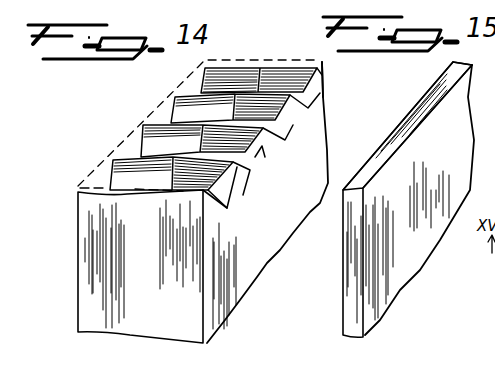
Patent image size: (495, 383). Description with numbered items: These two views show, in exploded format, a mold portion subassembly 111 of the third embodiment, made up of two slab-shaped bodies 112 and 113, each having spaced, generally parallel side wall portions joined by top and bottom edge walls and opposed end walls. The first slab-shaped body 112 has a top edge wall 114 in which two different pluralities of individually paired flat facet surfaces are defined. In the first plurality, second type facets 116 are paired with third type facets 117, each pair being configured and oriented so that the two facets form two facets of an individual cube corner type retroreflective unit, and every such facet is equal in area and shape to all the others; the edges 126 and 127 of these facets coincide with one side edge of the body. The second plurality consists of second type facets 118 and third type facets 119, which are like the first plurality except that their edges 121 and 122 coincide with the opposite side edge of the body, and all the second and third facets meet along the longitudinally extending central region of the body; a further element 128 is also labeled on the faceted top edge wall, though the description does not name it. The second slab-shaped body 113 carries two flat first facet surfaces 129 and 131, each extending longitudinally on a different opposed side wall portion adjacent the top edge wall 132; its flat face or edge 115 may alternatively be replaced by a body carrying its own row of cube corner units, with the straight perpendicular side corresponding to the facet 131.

In FIG. 14, the subassembly 111 is at (70, 345).
In FIG. 14, the slab-shaped body 112 is at (177, 289).
In FIG. 15, the slab-shaped body 113 is at (421, 217).
In FIG. 14, the top edge wall 114 is at (320, 59).
In FIG. 15, the flat face or edge 115 is at (449, 90).
In FIG. 14, the second type flat facet surface 116 is at (133, 165).
In FIG. 14, the third type flat facet surface 117 is at (148, 152).
In FIG. 14, the second type facet 118 is at (262, 157).
In FIG. 14, the third type facet 119 is at (255, 183).
In FIG. 14, the edge of facet 118 121 is at (268, 143).
In FIG. 14, the edge of facet 119 122 is at (320, 91).
In FIG. 15, the edge of facet 116 126 is at (494, 304).
In FIG. 15, the edge of facet 117 127 is at (494, 328).
In FIG. 14, the upper fin 128 is at (229, 110).
In FIG. 15, the flat facet surface 129 is at (432, 128).
In FIG. 15, the flat facet surface 131 is at (404, 114).
In FIG. 15, the top edge wall 132 is at (378, 140).